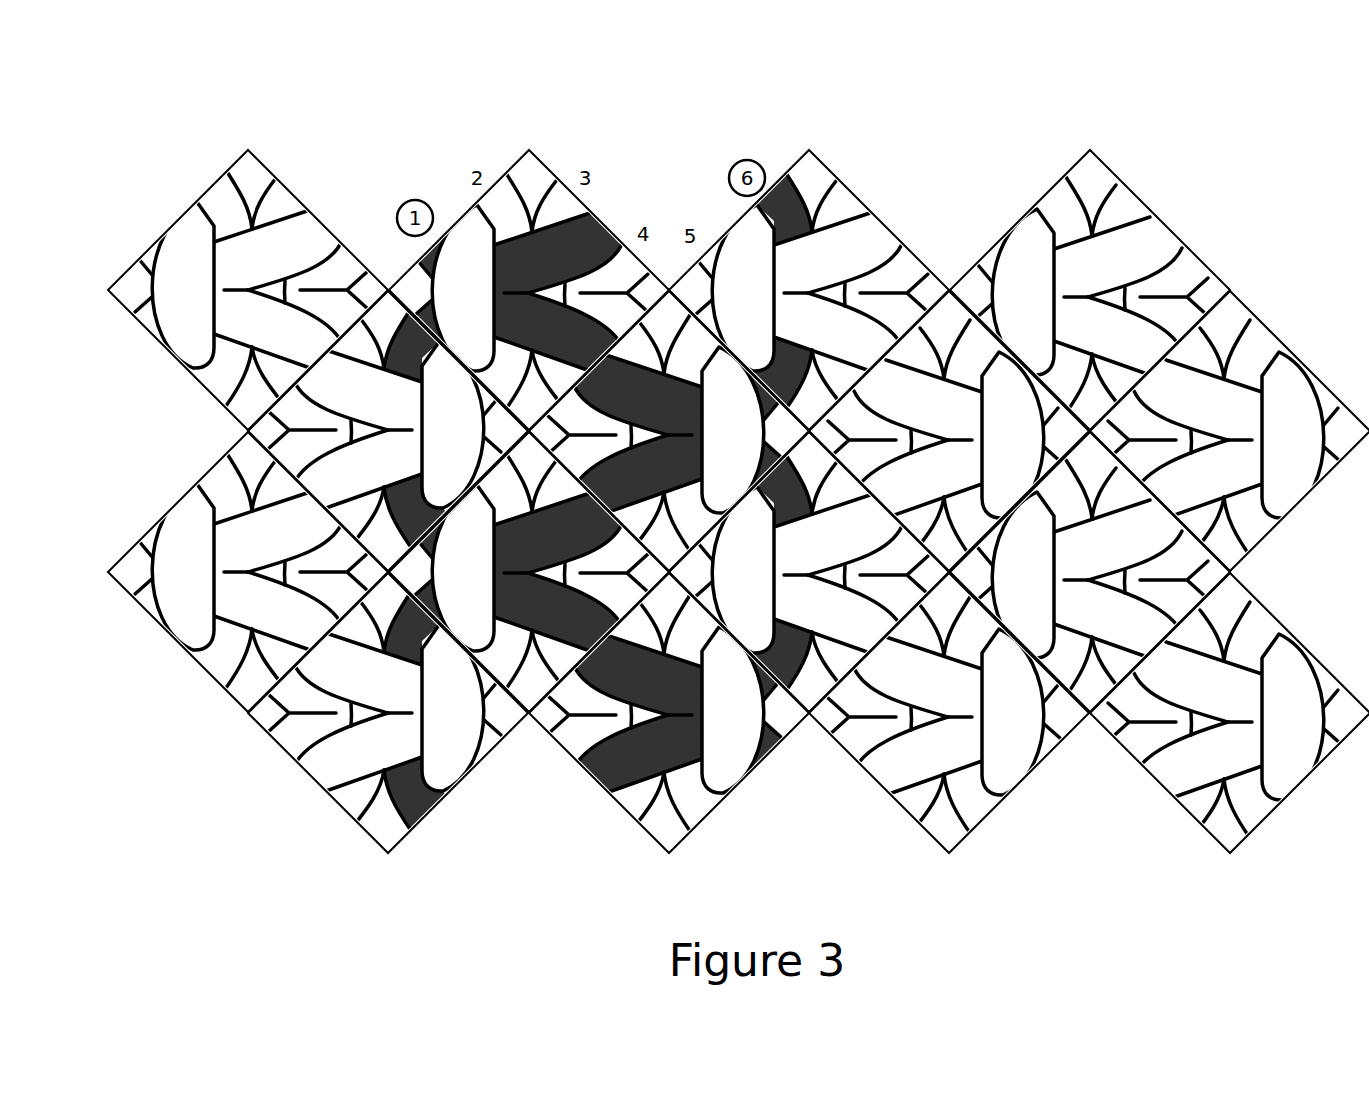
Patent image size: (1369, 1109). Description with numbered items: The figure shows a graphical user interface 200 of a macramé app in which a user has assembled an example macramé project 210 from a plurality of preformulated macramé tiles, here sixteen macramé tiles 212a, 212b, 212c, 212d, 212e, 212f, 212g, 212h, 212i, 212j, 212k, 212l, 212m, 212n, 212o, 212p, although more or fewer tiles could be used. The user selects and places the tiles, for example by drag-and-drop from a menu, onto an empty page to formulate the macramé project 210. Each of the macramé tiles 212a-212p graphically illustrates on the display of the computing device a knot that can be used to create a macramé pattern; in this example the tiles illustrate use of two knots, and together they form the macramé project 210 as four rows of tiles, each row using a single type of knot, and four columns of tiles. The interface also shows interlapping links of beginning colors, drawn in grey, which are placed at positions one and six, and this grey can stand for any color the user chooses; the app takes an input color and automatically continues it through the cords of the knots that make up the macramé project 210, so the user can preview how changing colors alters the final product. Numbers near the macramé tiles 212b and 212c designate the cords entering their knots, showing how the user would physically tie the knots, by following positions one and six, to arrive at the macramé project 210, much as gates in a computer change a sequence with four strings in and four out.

The lattice structure 200 is at (706, 463).
The macramé project 210 is at (738, 489).
The macramé tile 212a is at (160, 284).
The macramé tile 212b is at (441, 296).
The macramé tile 212c is at (718, 301).
The macramé tile 212d is at (1000, 303).
The macramé tile 212e is at (429, 441).
The macramé tile 212f is at (706, 441).
The macramé tile 212g is at (985, 441).
The macramé tile 212h is at (1267, 448).
The macramé tile 212i is at (159, 576).
The macramé tile 212j is at (439, 574).
The macramé tile 212k is at (713, 579).
The macramé tile 212l is at (997, 581).
The macramé tile 212m is at (426, 719).
The macramé tile 212n is at (706, 717).
The macramé tile 212o is at (981, 719).
The macramé tile 212p is at (1263, 729).